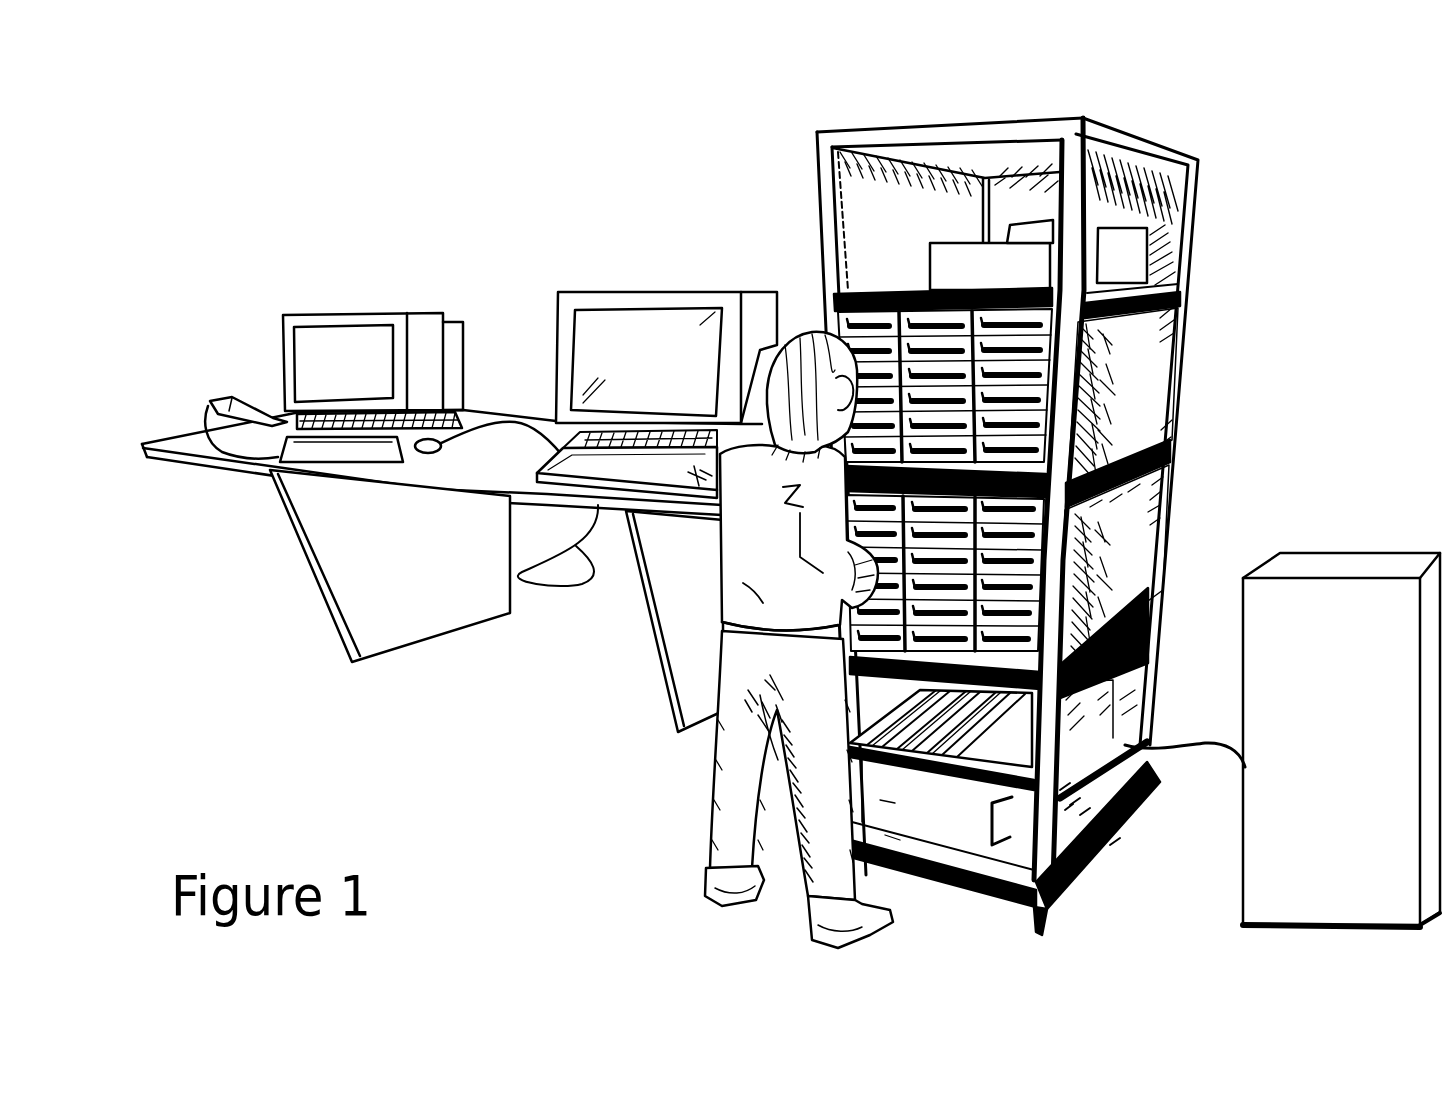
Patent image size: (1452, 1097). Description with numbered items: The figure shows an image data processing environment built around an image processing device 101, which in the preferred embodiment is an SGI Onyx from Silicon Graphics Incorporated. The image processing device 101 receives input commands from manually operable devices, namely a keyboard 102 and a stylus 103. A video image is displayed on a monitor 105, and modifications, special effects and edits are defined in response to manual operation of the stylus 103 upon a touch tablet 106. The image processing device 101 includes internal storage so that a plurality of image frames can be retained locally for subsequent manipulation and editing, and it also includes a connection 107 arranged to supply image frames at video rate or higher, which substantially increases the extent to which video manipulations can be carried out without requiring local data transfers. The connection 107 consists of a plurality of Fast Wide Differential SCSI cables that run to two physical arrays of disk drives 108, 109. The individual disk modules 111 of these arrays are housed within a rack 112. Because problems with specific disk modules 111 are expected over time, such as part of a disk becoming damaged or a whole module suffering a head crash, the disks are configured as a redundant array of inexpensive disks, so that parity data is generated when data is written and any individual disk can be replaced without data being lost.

The image processing device 101 is at (1383, 568).
The keyboard 102 is at (545, 452).
The stylus 103 is at (250, 400).
The monitor 105 is at (650, 327).
The touch tablet 106 is at (372, 450).
The connection 107 is at (1210, 748).
The array of disk drives 108 is at (1137, 407).
The array of disk drives 109 is at (1137, 542).
The disk modules 111 is at (862, 318).
The rack 112 is at (876, 137).